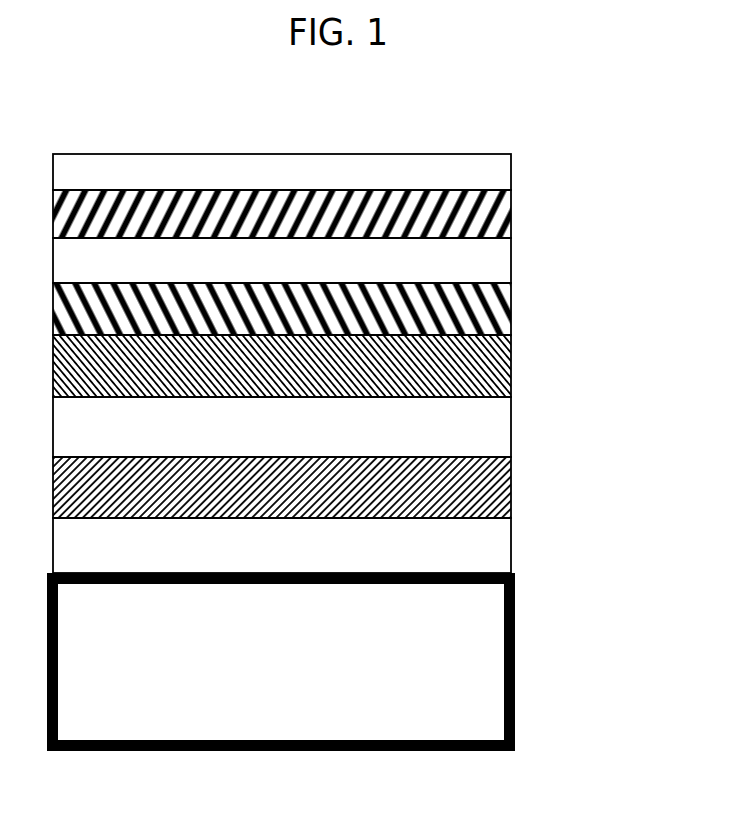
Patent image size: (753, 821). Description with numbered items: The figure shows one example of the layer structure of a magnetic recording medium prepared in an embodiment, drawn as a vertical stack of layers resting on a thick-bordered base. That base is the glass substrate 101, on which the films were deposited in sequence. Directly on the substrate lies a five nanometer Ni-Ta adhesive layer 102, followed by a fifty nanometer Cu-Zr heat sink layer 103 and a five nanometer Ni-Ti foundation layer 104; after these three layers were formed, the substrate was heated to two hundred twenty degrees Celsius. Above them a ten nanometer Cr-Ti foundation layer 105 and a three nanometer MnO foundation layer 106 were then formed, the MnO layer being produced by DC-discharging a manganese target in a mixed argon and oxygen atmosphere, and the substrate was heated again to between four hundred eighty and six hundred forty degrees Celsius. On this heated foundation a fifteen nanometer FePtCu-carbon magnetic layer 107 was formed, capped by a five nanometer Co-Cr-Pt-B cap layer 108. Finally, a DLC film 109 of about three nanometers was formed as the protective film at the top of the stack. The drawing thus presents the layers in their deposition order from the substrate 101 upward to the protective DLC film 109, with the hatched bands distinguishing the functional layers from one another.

The substrate 101 is at (513, 657).
The adhesive layer 102 is at (511, 558).
The heat sink layer 103 is at (511, 485).
The foundation layer 104 is at (511, 413).
The foundation layer 105 is at (511, 362).
The MnO foundation layer 106 is at (511, 302).
The magnetic layer 107 is at (511, 257).
The cap layer 108 is at (511, 210).
The DLC film 109 is at (511, 168).